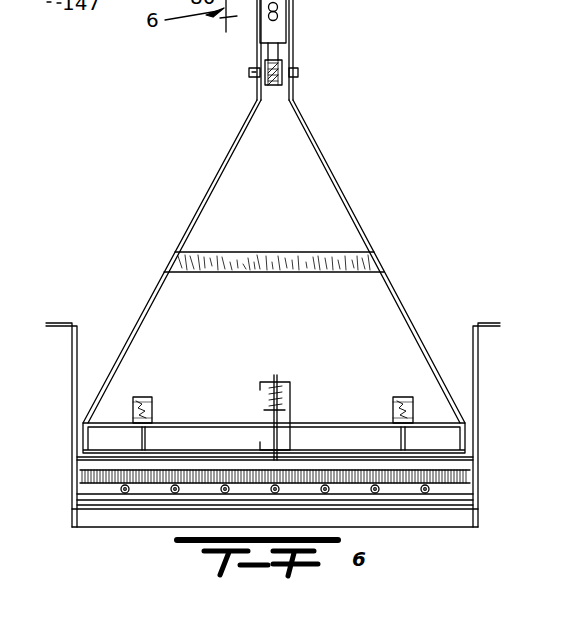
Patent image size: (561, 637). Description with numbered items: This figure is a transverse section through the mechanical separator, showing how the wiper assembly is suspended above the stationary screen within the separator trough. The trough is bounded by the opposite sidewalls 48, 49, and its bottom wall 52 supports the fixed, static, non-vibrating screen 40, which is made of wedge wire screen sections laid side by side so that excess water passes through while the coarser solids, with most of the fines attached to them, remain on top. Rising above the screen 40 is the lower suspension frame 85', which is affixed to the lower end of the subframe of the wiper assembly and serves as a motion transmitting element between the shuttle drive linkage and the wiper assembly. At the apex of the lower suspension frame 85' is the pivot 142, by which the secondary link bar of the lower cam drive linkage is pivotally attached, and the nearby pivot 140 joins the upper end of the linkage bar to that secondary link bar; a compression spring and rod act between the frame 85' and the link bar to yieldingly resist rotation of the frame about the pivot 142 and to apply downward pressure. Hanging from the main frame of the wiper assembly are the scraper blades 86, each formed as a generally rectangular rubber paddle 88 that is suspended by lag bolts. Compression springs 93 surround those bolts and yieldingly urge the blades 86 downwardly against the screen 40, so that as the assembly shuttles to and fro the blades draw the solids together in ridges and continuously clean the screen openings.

The pivot 140 is at (292, 20).
The pivot 142 is at (298, 72).
The lower suspension frame 85' is at (274, 261).
The sidewall 48 is at (70, 373).
The sidewall 49 is at (478, 372).
The compression springs 93 is at (153, 410).
The scraper blades 86 is at (80, 470).
The paddle 88 is at (470, 477).
The screen 40 is at (82, 490).
The bottom wall 52 is at (100, 529).